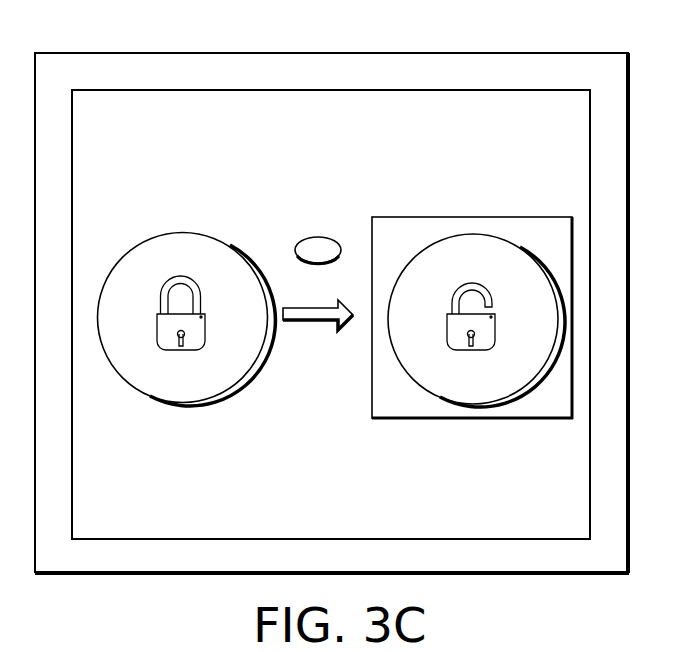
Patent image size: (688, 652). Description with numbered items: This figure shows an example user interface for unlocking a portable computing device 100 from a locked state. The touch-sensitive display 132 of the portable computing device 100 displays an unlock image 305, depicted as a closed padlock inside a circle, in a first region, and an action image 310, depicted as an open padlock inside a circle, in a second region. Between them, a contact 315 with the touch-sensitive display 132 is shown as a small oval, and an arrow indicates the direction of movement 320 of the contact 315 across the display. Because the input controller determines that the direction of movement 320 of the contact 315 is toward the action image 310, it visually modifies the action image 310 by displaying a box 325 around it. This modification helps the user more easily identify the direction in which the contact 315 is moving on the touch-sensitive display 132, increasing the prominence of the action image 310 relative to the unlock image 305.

The portable computing device 100 is at (603, 53).
The touch-sensitive display 132 is at (447, 90).
The unlock image 305 is at (184, 402).
The action image 310 is at (468, 404).
The contact 315 is at (318, 236).
The direction of movement 320 is at (313, 322).
The box 325 is at (472, 216).